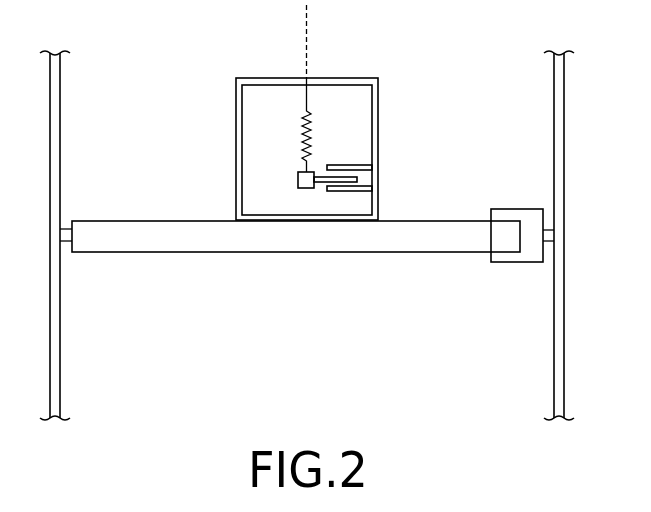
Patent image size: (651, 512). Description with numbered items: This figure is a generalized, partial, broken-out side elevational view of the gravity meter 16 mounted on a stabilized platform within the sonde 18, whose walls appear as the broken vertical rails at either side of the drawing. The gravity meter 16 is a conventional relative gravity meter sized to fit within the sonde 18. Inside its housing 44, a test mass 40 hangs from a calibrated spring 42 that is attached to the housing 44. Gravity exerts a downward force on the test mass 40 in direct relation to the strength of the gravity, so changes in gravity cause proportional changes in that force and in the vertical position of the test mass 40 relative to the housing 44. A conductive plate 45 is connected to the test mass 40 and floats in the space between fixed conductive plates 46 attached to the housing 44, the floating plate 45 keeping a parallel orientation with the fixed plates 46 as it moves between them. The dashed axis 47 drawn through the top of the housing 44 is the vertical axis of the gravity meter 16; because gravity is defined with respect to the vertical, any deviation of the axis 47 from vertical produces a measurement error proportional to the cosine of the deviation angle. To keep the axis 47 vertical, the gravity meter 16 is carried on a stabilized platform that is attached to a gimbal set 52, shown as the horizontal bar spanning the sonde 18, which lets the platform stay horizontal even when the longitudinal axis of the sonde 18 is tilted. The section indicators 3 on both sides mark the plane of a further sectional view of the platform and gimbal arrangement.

The section line 3- 3 is at (3, 224).
The gravity meter 16 is at (217, 100).
The sonde 18 is at (565, 82).
The test mass 40 is at (298, 180).
The calibrated spring 42 is at (307, 112).
The housing 44 is at (354, 78).
The conductive plate 45 is at (321, 177).
The fixed conductive plates 46 is at (357, 165).
The axis 47 is at (306, 30).
The gimbal set 52 is at (293, 250).